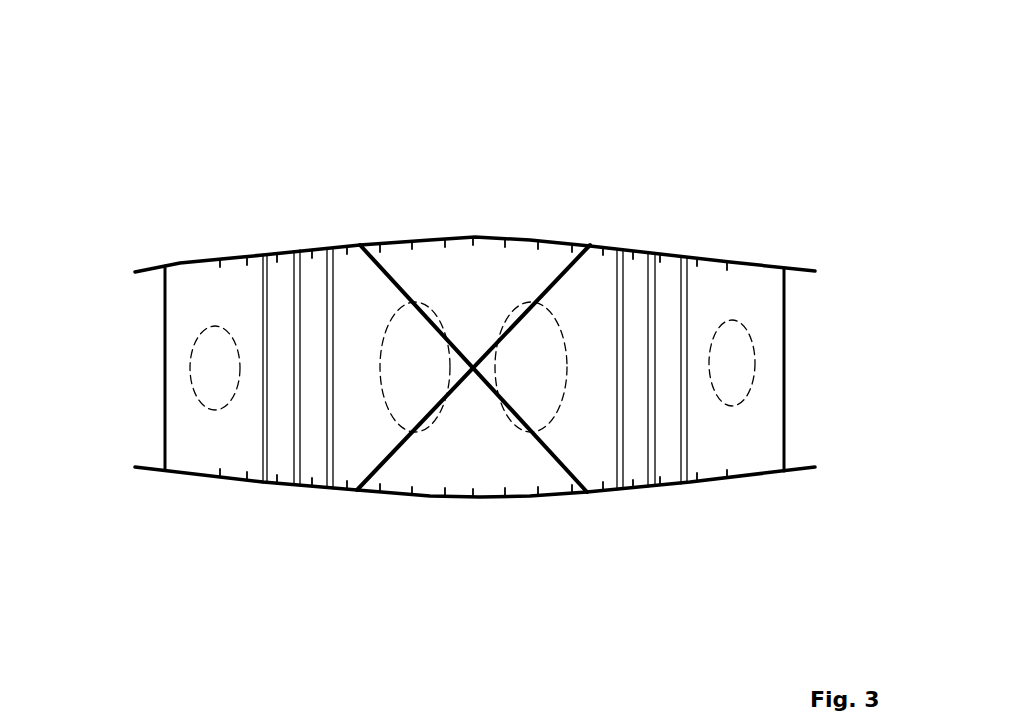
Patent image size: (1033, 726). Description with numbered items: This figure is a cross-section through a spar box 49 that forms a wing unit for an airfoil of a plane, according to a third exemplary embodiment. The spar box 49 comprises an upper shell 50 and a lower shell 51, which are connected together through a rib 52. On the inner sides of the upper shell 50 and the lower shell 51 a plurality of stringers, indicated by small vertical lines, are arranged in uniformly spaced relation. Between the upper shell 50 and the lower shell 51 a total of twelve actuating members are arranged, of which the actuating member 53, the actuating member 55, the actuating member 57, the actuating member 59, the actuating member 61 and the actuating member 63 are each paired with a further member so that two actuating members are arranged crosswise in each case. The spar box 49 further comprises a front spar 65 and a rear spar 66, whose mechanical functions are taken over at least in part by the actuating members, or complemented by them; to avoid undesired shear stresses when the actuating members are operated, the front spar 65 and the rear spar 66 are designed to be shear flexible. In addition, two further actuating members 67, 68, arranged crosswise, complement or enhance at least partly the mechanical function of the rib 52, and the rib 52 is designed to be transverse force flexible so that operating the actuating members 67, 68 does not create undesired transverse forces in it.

The spar box 49 is at (542, 90).
The upper shell 50 is at (742, 263).
The lower shell 51 is at (718, 483).
The rib 52 is at (763, 309).
The actuating member 53 is at (229, 334).
The actuating member 55 is at (299, 314).
The actuating member 57 is at (358, 338).
The actuating member 59 is at (598, 334).
The actuating member 61 is at (649, 313).
The actuating member 63 is at (709, 330).
The front spar 65 is at (163, 374).
The rear spar 66 is at (785, 403).
The actuating member 67 is at (393, 282).
The actuating member 68 is at (548, 283).